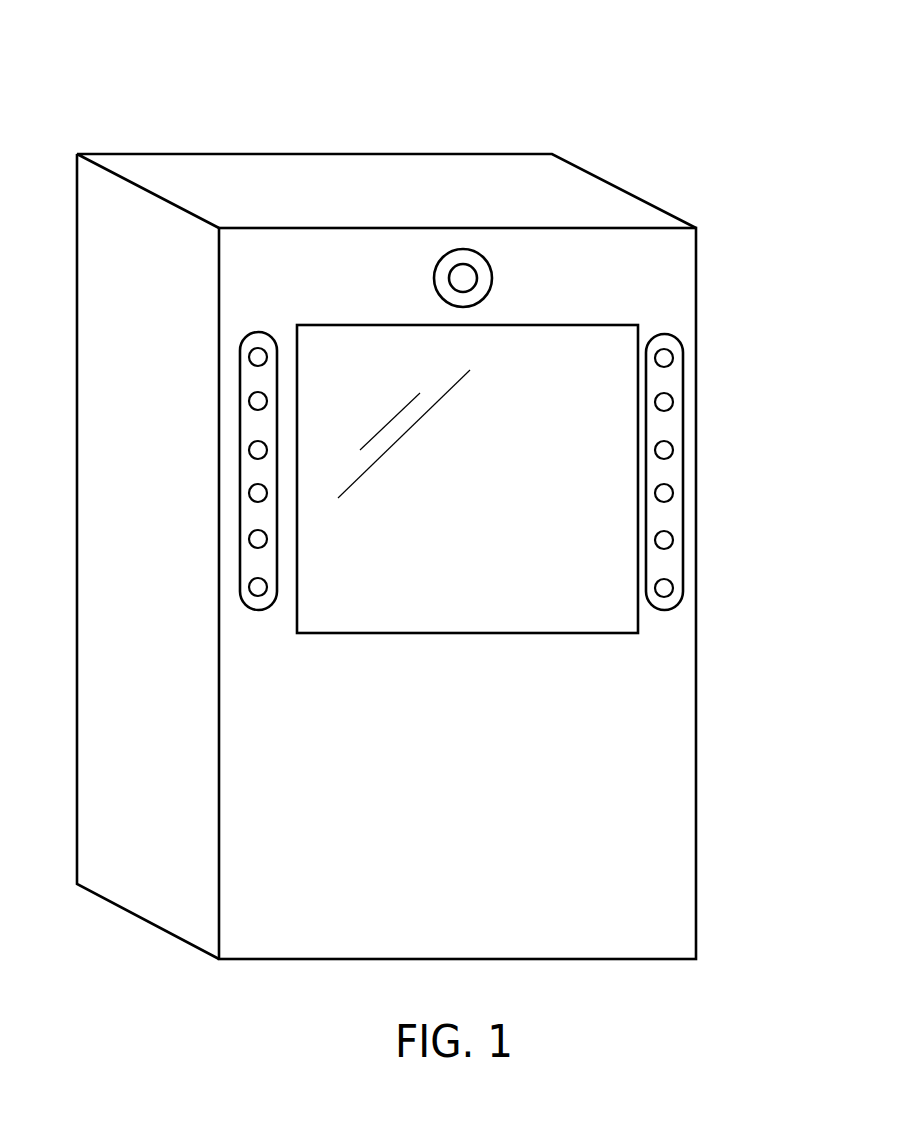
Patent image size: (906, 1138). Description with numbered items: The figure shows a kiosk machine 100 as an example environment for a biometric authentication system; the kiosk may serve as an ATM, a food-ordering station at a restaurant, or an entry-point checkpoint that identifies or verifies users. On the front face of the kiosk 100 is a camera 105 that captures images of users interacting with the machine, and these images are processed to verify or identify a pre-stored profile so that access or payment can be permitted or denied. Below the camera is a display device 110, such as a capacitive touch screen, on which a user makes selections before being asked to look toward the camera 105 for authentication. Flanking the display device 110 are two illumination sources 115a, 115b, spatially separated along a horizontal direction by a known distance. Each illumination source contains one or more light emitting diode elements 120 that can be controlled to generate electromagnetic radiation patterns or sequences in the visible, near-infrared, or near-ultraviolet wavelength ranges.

The kiosk machine 100 is at (105, 101).
The camera 105 is at (460, 267).
The display device 110 is at (380, 337).
The illumination source 115a is at (240, 528).
The illumination source 115b is at (683, 438).
The light emitting diode (LED) element 120 is at (673, 592).